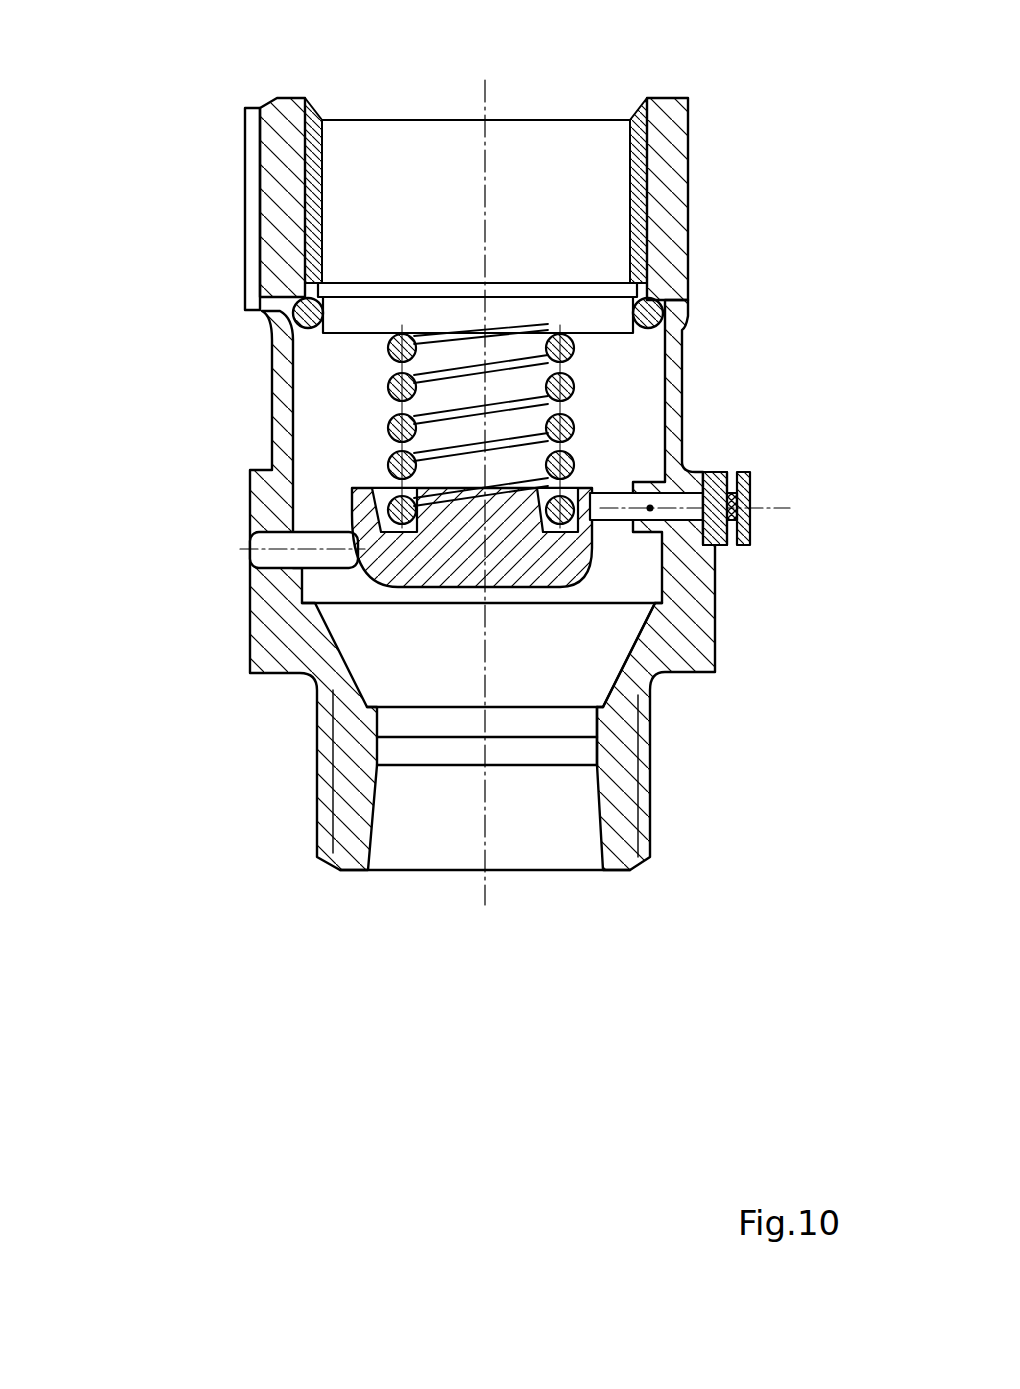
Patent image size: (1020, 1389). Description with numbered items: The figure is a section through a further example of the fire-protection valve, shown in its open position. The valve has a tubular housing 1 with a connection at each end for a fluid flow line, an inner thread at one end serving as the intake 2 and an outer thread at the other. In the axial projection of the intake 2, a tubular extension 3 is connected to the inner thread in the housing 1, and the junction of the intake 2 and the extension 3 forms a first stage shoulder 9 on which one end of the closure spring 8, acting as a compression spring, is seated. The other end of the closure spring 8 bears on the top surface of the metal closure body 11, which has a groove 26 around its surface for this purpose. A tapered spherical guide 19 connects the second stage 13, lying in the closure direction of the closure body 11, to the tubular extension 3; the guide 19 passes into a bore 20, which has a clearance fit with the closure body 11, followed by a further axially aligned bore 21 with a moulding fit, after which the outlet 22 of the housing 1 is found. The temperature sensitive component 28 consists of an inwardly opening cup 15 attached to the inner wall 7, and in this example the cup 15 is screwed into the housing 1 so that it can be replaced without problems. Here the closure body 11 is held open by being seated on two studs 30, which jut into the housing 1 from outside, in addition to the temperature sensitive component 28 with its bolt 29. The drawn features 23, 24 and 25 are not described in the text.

The tubular housing 1 is at (283, 130).
The intake 2 is at (590, 192).
The tubular extension 3 is at (322, 387).
The inner wall 7 is at (668, 407).
The closure spring 8 is at (565, 352).
The first stage shoulder 9 is at (262, 280).
The closure body 11 is at (550, 562).
The second stage 13 is at (343, 601).
The cup 15 is at (752, 527).
The tapered spherical guide 19 is at (598, 682).
The bore 20 is at (580, 727).
The bore 21 is at (508, 753).
The outlet 22 is at (446, 837).
The shoulder 23 is at (408, 708).
The shoulder edge 24 is at (402, 738).
The spring plate 25 is at (548, 312).
The groove 26 is at (378, 497).
The temperature sensitive component 28 is at (723, 467).
The bolt 29 is at (735, 552).
The studs 30 is at (263, 549).